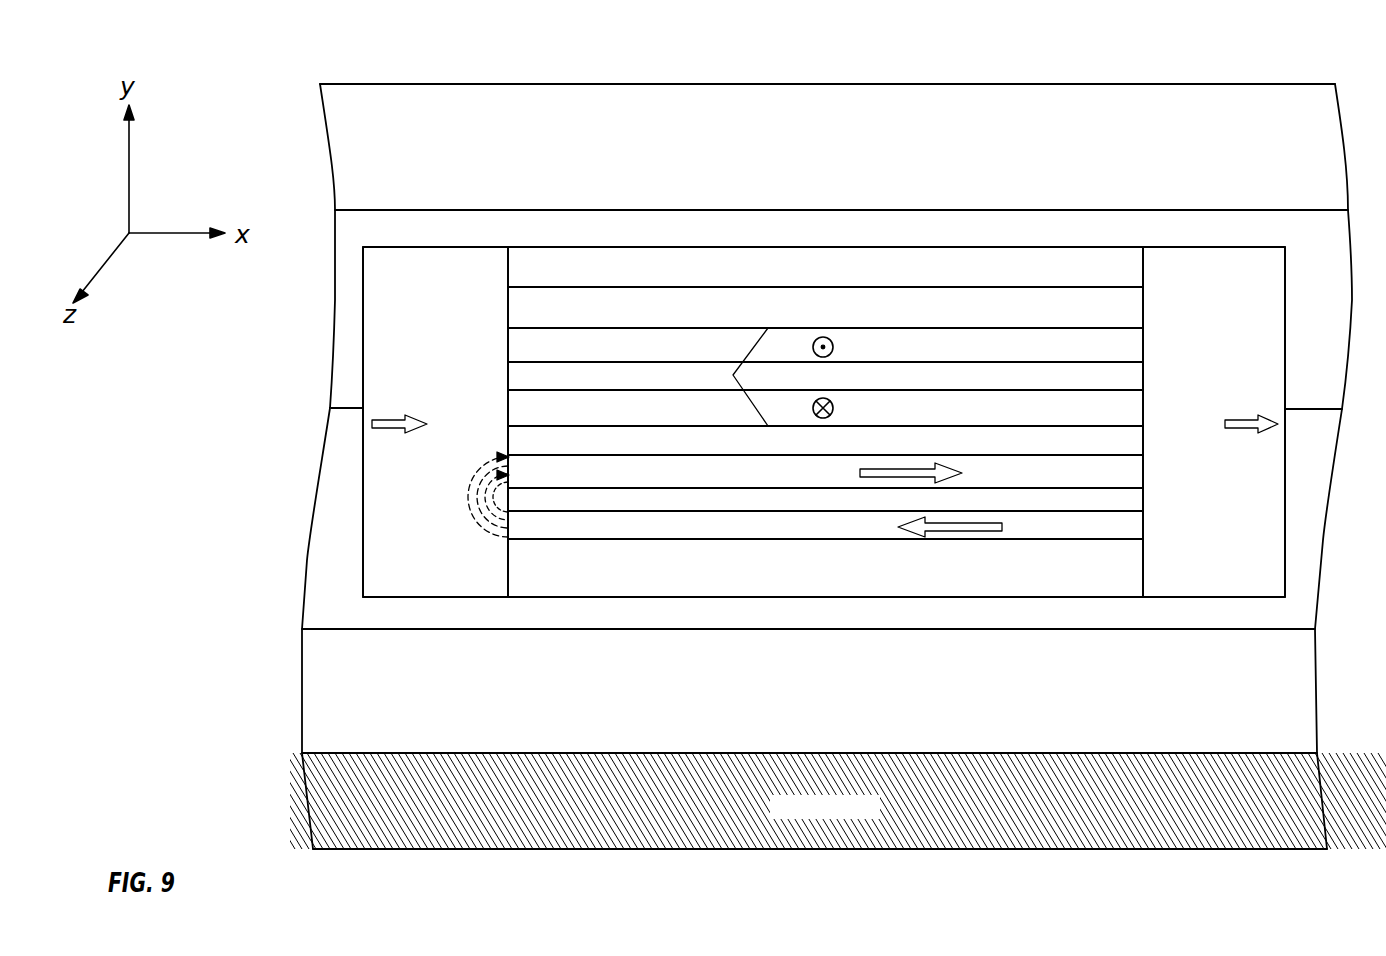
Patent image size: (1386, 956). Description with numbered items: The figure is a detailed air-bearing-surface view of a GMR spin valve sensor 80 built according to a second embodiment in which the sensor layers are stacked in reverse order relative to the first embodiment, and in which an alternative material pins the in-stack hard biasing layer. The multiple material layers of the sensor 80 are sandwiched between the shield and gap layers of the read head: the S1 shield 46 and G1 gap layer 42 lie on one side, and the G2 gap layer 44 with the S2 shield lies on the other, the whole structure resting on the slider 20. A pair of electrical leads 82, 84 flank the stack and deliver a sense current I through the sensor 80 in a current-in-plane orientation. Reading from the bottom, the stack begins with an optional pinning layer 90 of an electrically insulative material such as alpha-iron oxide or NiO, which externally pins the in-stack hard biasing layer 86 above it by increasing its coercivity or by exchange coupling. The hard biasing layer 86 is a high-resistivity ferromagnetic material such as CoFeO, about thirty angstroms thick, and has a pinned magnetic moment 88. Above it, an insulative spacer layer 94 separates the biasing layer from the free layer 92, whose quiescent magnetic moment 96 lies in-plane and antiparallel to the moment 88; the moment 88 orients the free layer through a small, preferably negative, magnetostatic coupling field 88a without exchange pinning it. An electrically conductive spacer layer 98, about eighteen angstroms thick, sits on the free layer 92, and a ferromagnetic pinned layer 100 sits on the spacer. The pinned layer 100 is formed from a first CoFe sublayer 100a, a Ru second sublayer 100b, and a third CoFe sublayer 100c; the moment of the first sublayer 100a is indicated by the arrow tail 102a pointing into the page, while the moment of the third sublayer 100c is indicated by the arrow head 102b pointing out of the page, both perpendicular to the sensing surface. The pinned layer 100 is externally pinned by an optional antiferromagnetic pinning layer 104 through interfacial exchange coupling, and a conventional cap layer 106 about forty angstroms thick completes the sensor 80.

The GMR spin valve sensor 80 is at (648, 232).
The electrical lead 82 is at (363, 272).
The electrical lead 84 is at (1273, 300).
The G2 gap layer 44 is at (334, 316).
The G1 gap layer 42 is at (317, 565).
The S1 shield layer 46 is at (303, 683).
The slider 20 is at (311, 795).
The cap layer 106 is at (512, 275).
The antiferromagnetic pinning layer 104 is at (512, 317).
The ferromagnetic pinned layer 100 is at (508, 329).
The third sublayer 100c is at (1140, 342).
The second sublayer 100b is at (1140, 380).
The first sublayer 100a is at (1140, 417).
The arrow head 102b is at (834, 349).
The arrow tail 102a is at (834, 413).
The electrically conductive spacer layer 98 is at (513, 443).
The free layer 92 is at (1140, 473).
The magnetic moment of free layer 96 is at (950, 477).
The insulative spacer layer 94 is at (1140, 502).
The in-stack hard biasing layer 86 is at (1140, 529).
The magnetic moment of hard biasing layer 88 is at (1003, 527).
The magnetostatic coupling field 88a is at (478, 480).
The pinning layer 90 is at (513, 573).